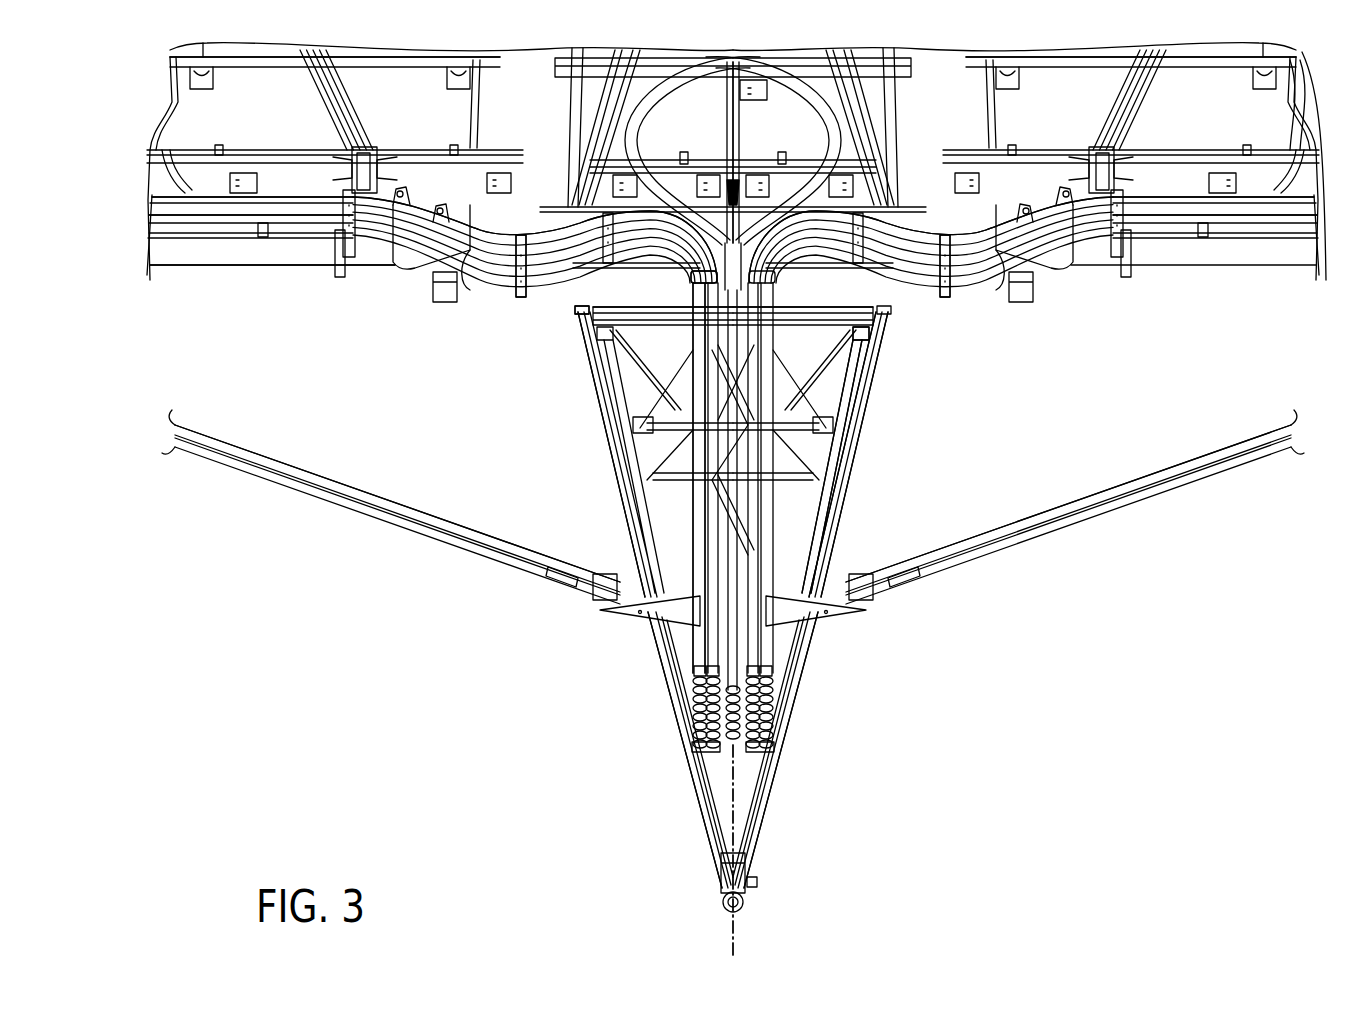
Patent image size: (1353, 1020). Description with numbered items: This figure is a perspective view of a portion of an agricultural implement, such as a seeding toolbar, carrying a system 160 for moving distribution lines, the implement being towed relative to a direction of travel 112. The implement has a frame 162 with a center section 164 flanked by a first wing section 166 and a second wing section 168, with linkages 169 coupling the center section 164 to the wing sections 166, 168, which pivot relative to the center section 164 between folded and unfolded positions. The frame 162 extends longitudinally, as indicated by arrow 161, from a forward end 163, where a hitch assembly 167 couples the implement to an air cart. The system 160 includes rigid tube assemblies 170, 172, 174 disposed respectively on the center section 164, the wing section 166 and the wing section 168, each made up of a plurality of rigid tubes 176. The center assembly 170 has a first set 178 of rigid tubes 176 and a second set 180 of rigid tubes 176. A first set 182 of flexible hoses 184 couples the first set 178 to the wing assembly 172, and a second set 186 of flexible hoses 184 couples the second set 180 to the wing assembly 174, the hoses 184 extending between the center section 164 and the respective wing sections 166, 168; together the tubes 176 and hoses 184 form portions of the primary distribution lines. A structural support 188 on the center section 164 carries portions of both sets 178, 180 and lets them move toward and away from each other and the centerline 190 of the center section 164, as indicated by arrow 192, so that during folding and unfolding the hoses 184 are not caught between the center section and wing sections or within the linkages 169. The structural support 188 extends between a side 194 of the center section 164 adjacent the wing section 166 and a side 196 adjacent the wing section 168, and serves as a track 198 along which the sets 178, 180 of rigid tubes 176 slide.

The direction of travel 112 is at (980, 705).
The system 160 is at (582, 387).
The arrow 161 is at (1030, 597).
The frame 162 is at (862, 500).
The forward end 163 is at (779, 808).
The center section 164 is at (848, 540).
The wing section 166 is at (292, 252).
The hitch assembly 167 is at (745, 904).
The wing section 168 is at (1170, 278).
The linkages 169 is at (396, 526).
The rigid tube assembly 170 is at (688, 342).
The rigid tube assembly 172 is at (282, 252).
The rigid tube assembly 174 is at (1183, 250).
The rigid tubes 176 is at (305, 238).
The first set of rigid tubes 178 is at (688, 362).
The second set of rigid tubes 180 is at (798, 334).
The first set of flexible hoses 182 is at (490, 296).
The flexible hoses 184 is at (538, 290).
The second set of flexible hoses 186 is at (964, 316).
The structural support 188 is at (777, 357).
The centerline 190 is at (733, 918).
The arrow 192 is at (727, 300).
The side 194 is at (582, 362).
The side 196 is at (890, 349).
The track 198 is at (823, 318).